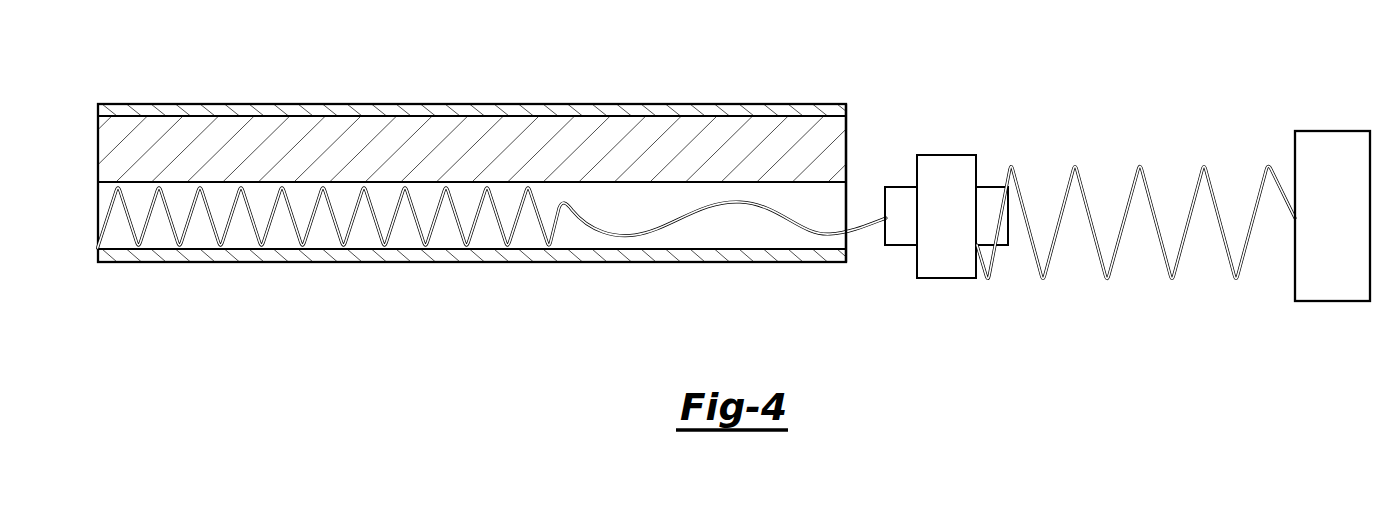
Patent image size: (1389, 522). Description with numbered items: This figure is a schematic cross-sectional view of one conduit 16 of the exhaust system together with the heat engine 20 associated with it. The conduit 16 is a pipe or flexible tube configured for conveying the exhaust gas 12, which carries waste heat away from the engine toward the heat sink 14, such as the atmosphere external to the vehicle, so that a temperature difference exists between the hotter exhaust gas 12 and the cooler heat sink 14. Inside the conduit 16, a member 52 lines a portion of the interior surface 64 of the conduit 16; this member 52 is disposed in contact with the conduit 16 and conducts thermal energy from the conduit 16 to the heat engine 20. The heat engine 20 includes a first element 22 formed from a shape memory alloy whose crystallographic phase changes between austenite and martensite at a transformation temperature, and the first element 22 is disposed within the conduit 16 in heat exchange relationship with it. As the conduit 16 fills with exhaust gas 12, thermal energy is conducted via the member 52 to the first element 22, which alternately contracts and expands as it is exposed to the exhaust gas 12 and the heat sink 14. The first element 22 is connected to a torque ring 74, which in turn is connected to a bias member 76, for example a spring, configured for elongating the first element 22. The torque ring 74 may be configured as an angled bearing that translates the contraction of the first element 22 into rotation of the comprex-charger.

The exhaust gas 12 is at (94, 211).
The heat sink 14 is at (853, 268).
The conduit 16 is at (300, 104).
The heat engine 20 is at (180, 88).
The first element 22 is at (250, 227).
The member 52 is at (498, 148).
The interior surface 64 is at (740, 115).
The torque ring 74 is at (946, 155).
The bias member 76 is at (1107, 283).